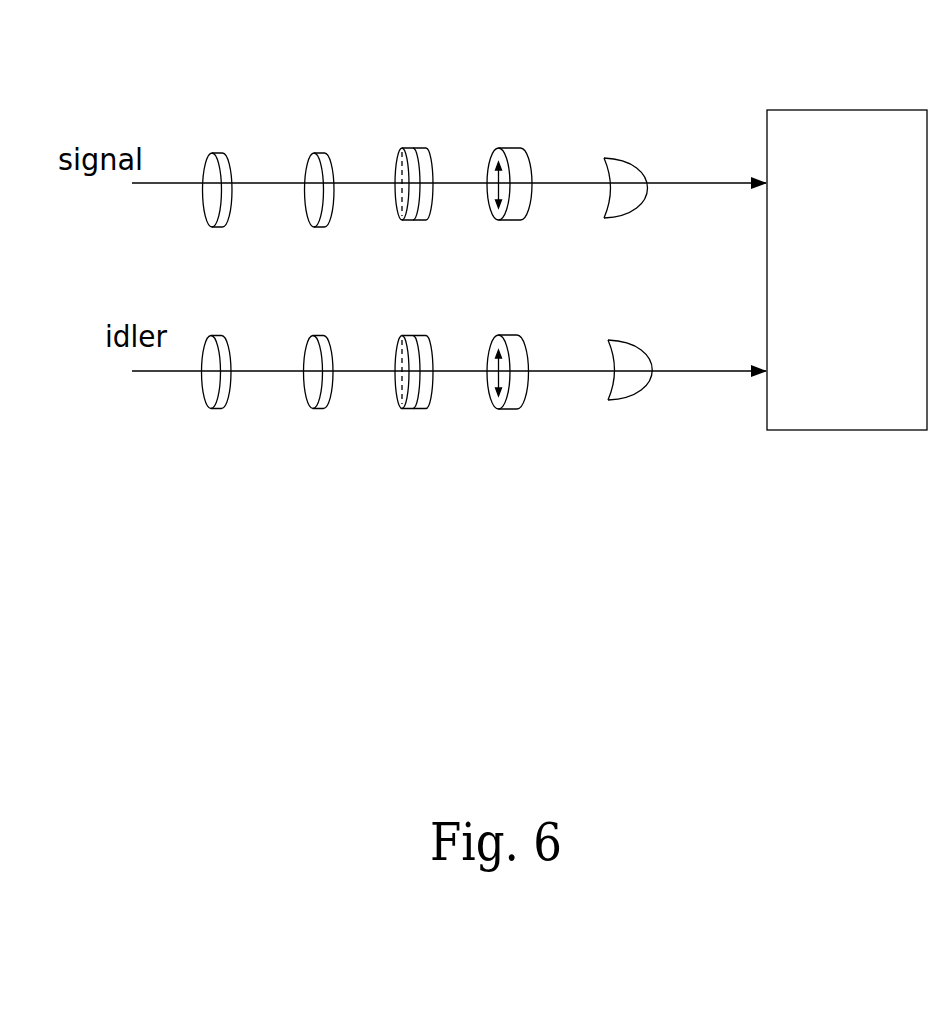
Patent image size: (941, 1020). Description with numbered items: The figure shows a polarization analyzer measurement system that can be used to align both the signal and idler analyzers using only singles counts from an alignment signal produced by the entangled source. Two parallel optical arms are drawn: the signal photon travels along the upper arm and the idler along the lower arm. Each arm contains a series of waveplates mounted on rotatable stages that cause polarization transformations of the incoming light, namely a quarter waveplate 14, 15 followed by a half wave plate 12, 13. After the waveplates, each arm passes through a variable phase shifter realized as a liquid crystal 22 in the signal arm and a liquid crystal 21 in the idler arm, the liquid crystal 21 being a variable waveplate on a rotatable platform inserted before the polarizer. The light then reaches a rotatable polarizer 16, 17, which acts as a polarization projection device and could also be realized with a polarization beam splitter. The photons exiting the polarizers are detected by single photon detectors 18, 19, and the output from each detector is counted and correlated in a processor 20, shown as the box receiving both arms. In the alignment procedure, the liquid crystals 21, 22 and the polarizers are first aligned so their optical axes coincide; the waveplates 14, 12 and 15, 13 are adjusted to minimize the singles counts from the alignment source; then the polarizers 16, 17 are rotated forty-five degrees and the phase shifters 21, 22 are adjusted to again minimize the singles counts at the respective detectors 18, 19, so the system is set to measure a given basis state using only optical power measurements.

The half wave plate 12 is at (334, 128).
The half wave plate 13 is at (321, 382).
The quarter waveplate 14 is at (223, 128).
The quarter waveplate 15 is at (221, 378).
The rotatable polarizer 16 is at (522, 129).
The rotatable polarizer 17 is at (516, 378).
The single photon detector 18 is at (614, 125).
The single photon detector 19 is at (638, 386).
The processor 20 is at (847, 240).
The variable waveplate 21 is at (414, 379).
The liquid crystal 22 is at (411, 144).